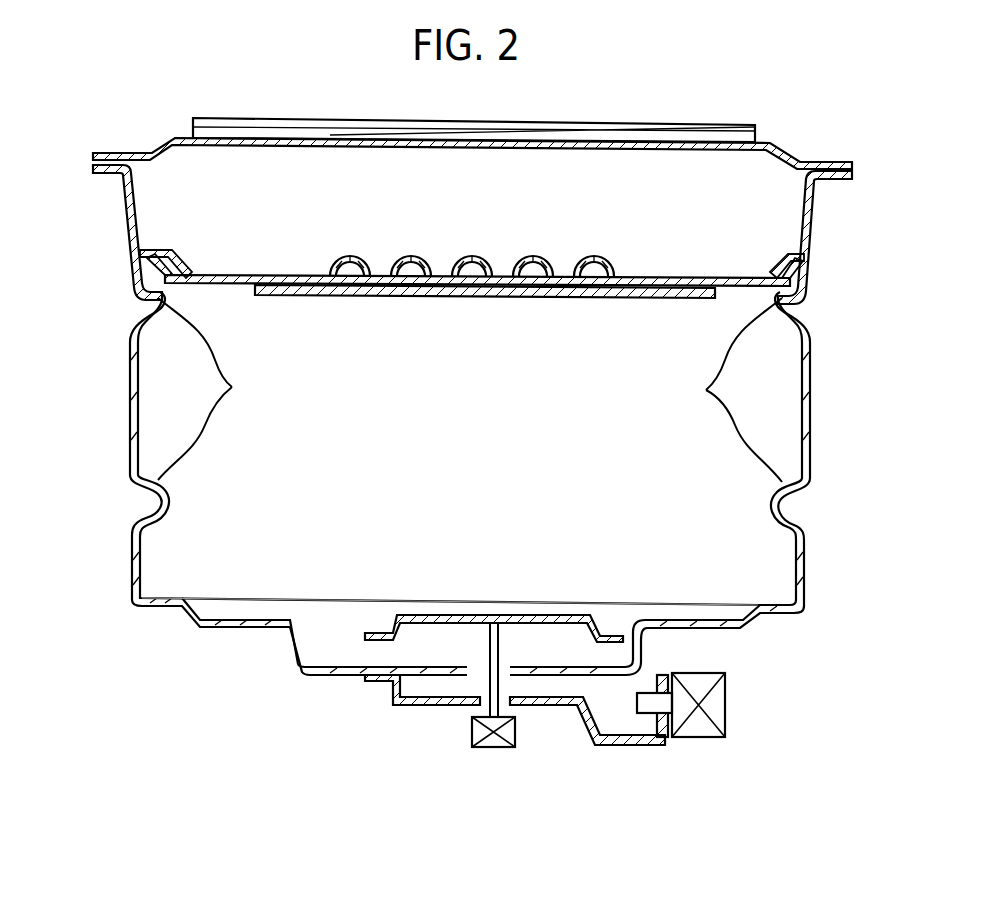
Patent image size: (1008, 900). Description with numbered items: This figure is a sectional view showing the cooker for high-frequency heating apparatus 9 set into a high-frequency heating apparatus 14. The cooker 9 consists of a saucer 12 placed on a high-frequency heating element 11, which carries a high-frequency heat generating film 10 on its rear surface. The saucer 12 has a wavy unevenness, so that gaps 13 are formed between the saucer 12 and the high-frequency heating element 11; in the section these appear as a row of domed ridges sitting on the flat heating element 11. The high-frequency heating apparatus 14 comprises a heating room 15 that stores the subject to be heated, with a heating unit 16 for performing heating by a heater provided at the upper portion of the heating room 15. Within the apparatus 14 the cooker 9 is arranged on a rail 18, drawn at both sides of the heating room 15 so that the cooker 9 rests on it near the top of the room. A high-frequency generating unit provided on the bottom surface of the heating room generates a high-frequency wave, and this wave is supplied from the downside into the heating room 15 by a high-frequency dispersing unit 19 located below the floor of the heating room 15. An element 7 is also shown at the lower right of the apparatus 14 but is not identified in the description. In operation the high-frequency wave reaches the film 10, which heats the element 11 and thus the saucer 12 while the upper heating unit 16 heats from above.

The pressure sensor / valve unit 7 is at (730, 700).
The cooker for high-frequency heating apparatus 9 is at (686, 255).
The high-frequency heat generating film 10 is at (463, 298).
The high-frequency heating element 11 is at (675, 298).
The saucer 12 is at (594, 268).
The gaps 13 is at (538, 272).
The high-frequency heating apparatus 14 is at (121, 374).
The heating room 15 is at (170, 548).
The heating unit 16 is at (655, 122).
The rail 18 is at (470, 390).
The high-frequency dispersing unit 19 is at (525, 620).